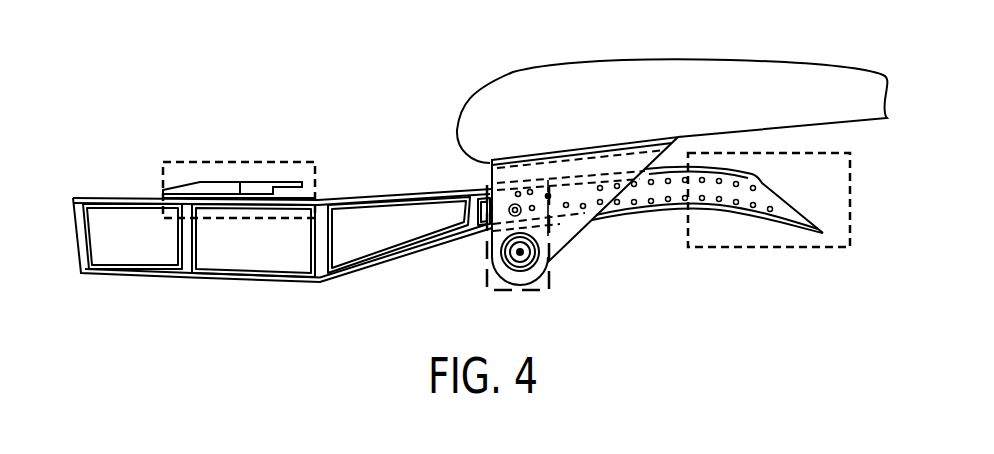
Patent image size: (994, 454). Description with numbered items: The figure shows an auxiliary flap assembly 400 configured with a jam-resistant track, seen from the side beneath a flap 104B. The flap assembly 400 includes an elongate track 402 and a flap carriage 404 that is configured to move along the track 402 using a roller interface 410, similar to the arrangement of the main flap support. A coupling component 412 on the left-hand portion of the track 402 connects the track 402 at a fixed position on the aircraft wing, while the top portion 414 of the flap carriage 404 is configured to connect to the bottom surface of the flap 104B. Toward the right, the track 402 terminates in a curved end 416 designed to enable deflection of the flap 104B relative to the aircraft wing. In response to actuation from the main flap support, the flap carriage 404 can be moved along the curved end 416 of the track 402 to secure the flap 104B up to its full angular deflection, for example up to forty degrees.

The flap 104B is at (556, 68).
The flap assembly 400 is at (288, 72).
The track 402 is at (628, 217).
The flap carriage 404 is at (563, 257).
The roller interface 410 is at (487, 265).
The coupling component 412 is at (162, 178).
The top portion 414 is at (492, 157).
The curved end 416 is at (776, 249).